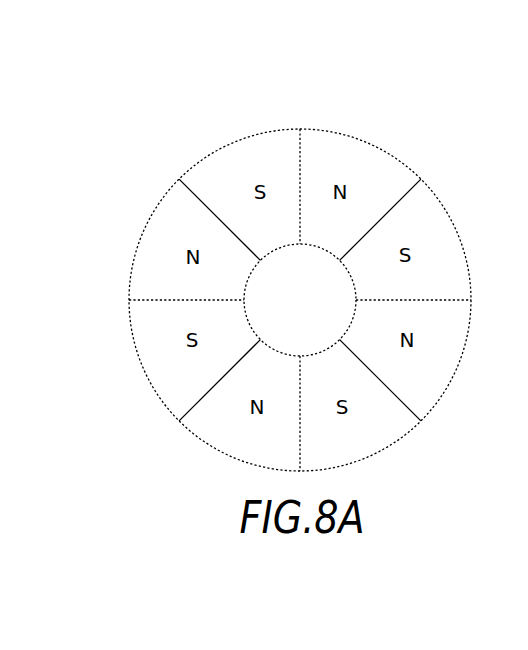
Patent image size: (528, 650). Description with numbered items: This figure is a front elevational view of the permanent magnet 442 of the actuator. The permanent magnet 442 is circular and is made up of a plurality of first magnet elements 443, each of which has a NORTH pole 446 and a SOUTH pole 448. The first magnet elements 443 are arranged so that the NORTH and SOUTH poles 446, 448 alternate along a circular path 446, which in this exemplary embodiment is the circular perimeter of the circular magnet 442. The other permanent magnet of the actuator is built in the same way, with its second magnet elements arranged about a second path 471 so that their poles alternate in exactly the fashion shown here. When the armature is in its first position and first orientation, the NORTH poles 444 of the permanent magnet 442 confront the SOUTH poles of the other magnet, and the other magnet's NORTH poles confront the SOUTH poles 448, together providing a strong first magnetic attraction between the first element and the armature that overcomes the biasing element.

The permanent magnet 442 is at (274, 129).
The first magnet elements 443 is at (309, 138).
The NORTH poles 444 is at (341, 143).
The NORTH pole 446 is at (389, 151).
The SOUTH pole 448 is at (233, 147).
The second path 471 is at (456, 228).